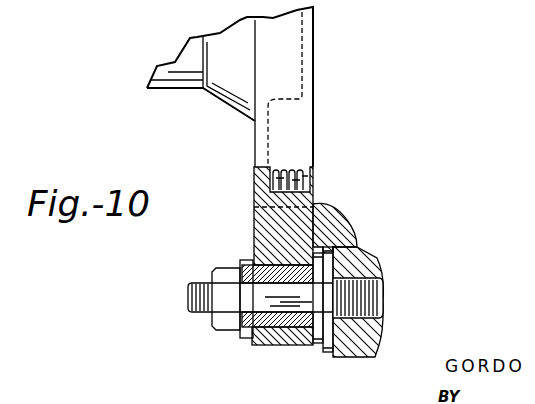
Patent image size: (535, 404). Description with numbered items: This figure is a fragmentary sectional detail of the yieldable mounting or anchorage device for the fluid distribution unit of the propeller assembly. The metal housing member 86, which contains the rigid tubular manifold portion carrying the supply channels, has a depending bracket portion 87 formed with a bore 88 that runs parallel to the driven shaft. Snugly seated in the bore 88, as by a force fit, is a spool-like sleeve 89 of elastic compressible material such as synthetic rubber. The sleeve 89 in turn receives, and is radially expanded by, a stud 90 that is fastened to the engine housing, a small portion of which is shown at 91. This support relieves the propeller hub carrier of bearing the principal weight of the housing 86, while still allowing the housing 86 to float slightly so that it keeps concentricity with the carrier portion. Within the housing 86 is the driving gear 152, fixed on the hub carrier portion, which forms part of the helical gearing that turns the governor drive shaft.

The housing member 86 is at (252, 123).
The depending bracket portion 87 is at (260, 228).
The bore 88 is at (334, 218).
The spool-like sleeve 89 is at (283, 325).
The stud 90 is at (307, 297).
The engine housing 91 is at (357, 248).
The driving gear 152 is at (308, 172).